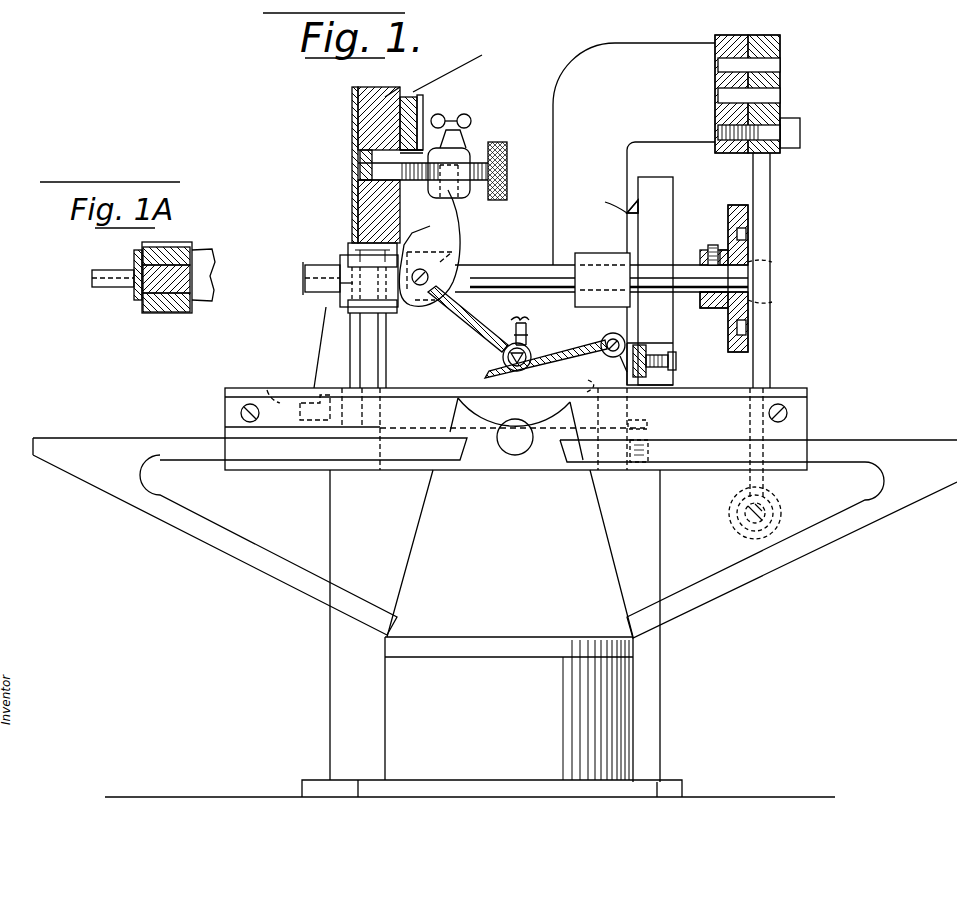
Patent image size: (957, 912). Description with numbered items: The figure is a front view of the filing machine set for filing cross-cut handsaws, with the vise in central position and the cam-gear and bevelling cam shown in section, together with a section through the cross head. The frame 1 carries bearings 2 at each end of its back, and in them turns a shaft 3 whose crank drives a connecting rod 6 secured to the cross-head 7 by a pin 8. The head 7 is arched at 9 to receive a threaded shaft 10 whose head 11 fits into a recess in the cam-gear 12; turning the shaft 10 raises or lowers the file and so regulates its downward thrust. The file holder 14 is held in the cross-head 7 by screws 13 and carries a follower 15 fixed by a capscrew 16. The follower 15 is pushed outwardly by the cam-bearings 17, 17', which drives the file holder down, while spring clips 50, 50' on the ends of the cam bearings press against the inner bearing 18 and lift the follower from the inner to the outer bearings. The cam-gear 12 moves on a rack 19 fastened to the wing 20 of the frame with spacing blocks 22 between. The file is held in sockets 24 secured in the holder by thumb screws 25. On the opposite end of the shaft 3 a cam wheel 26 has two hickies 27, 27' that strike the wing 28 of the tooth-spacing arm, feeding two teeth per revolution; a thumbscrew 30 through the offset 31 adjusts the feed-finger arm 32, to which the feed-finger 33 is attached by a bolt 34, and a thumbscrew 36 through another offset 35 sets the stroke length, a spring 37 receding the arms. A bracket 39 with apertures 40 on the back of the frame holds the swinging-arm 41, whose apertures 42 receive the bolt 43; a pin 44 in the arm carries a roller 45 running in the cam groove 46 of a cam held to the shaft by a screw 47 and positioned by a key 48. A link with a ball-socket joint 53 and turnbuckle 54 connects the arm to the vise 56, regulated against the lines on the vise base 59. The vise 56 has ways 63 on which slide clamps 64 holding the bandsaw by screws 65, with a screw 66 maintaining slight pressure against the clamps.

In FIG. 1, the frame 1 is at (433, 373).
In FIG. 1, the bearings 2 is at (588, 260).
In FIG. 1, the shaft 3 is at (692, 293).
In FIG. 1, the connecting rod 6 is at (316, 348).
In FIG. 1, the cross-head 7 is at (340, 257).
In FIG. 1A, the cross-head 7 is at (134, 264).
In FIG. 1, the pin 8 is at (305, 280).
In FIG. 1A, the pin 8 is at (97, 278).
In FIG. 1, the arch 9 is at (440, 250).
In FIG. 1A, the arch 9 is at (205, 297).
In FIG. 1, the threaded shaft 10 is at (422, 150).
In FIG. 1, the head 11 is at (352, 160).
In FIG. 1, the cam-gear 12 is at (400, 90).
In FIG. 1, the screws 13 is at (437, 267).
In FIG. 1, the file holder 14 is at (463, 327).
In FIG. 1, the follower 15 is at (430, 225).
In FIG. 1, the capscrew 16 is at (460, 242).
In FIG. 1, the cam-bearing 17 is at (486, 164).
In FIG. 1, the cam-bearing 17' is at (335, 101).
In FIG. 1, the inner bearing 18 is at (350, 200).
In FIG. 1, the rack 19 is at (352, 245).
In FIG. 1A, the rack 19 is at (177, 250).
In FIG. 1, the wing 20 is at (392, 313).
In FIG. 1A, the wing 20 is at (173, 305).
In FIG. 1, the spacing blocks 22 is at (353, 284).
In FIG. 1, the sockets 24 is at (503, 357).
In FIG. 1, the thumb screws 25 is at (523, 320).
In FIG. 1, the cam wheel 26 is at (674, 194).
In FIG. 1, the hickie 27 is at (621, 206).
In FIG. 1, the hickie 27' is at (611, 197).
In FIG. 1, the wing 28 is at (596, 310).
In FIG. 1, the thumbscrew 30 is at (676, 363).
In FIG. 1, the offset 31 is at (642, 347).
In FIG. 1, the feed-finger arm 32 is at (638, 367).
In FIG. 1, the feed-finger 33 is at (552, 363).
In FIG. 1, the bolt 34 is at (607, 337).
In FIG. 1, the offset 35 is at (650, 448).
In FIG. 1, the thumbscrew 36 is at (648, 422).
In FIG. 1, the spring 37 is at (590, 380).
In FIG. 1, the bracket 39 is at (634, 154).
In FIG. 1, the apertures 40 is at (715, 90).
In FIG. 1, the swinging-arm 41 is at (765, 185).
In FIG. 1, the apertures 42 is at (780, 65).
In FIG. 1, the bolt 43 is at (788, 138).
In FIG. 1, the pin 44 is at (770, 283).
In FIG. 1, the roller 45 is at (768, 303).
In FIG. 1, the cam groove 46 is at (750, 330).
In FIG. 1, the screw 47 is at (712, 247).
In FIG. 1, the key 48 is at (777, 263).
In FIG. 1, the spring clip 50 is at (441, 102).
In FIG. 1, the spring clip 50' is at (454, 93).
In FIG. 1, the ball-socket joint 53 is at (780, 502).
In FIG. 1, the turnbuckle 54 is at (333, 368).
In FIG. 1, the vise 56 is at (593, 535).
In FIG. 1, the vise base 59 is at (509, 709).
In FIG. 1, the ways 63 is at (920, 450).
In FIG. 1, the clamps 64 is at (787, 395).
In FIG. 1, the screws 65 is at (787, 412).
In FIG. 1, the screw 66 is at (500, 482).